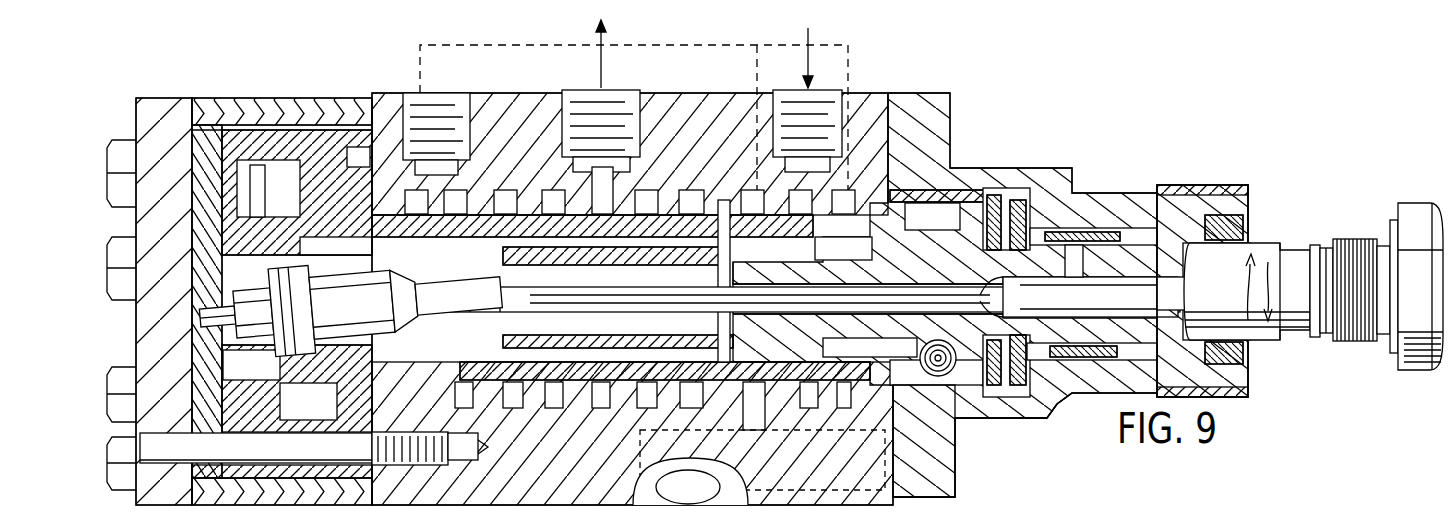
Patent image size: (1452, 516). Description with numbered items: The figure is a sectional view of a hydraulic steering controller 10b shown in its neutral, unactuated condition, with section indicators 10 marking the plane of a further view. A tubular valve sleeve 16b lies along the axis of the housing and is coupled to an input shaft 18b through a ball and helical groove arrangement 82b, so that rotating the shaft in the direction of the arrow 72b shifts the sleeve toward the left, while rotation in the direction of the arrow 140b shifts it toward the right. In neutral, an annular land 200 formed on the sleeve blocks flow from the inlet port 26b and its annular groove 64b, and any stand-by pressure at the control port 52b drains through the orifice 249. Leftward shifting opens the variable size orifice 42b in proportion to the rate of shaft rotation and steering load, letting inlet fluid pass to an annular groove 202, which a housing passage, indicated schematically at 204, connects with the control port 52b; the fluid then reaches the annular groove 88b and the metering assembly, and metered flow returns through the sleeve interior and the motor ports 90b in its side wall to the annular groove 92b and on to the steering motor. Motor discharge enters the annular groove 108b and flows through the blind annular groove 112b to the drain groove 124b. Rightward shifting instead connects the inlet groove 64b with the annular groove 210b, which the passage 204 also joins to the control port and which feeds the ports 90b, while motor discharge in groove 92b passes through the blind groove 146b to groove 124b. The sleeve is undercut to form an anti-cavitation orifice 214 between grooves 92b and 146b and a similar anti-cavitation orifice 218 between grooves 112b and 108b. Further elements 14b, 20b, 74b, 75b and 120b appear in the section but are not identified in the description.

The section line 10 is at (272, 42).
The controller 10b is at (1290, 118).
The spring seat 14b is at (350, 386).
The valve sleeve 16b is at (432, 465).
The input shaft 18b is at (1332, 240).
The nut 20b is at (1396, 230).
The inlet port 26b is at (818, 92).
The variable size orifice 42b is at (870, 127).
The control port 52b is at (420, 101).
The annular groove 64b is at (830, 192).
The arrow 72b is at (1252, 291).
The pilot plunger 74b is at (350, 306).
The valve spool 75b is at (622, 313).
The ball and helical groove arrangement 82b is at (955, 426).
The annular groove 88b is at (475, 170).
The motor ports 90b is at (712, 212).
The annular groove 92b is at (690, 192).
The annular groove 108b is at (505, 192).
The blind annular groove 112b is at (550, 192).
The piston rod 120b is at (407, 181).
The annular groove 124b is at (633, 160).
The arrow 140b is at (1300, 246).
The blind groove 146b is at (646, 192).
The annular land 200 is at (815, 237).
The annular groove 202 is at (875, 172).
The housing passage 204 is at (502, 64).
The annular groove 210b is at (752, 192).
The anti-cavitation orifice 214 is at (590, 265).
The anti-cavitation orifice 218 is at (520, 212).
The orifice 249 is at (794, 445).